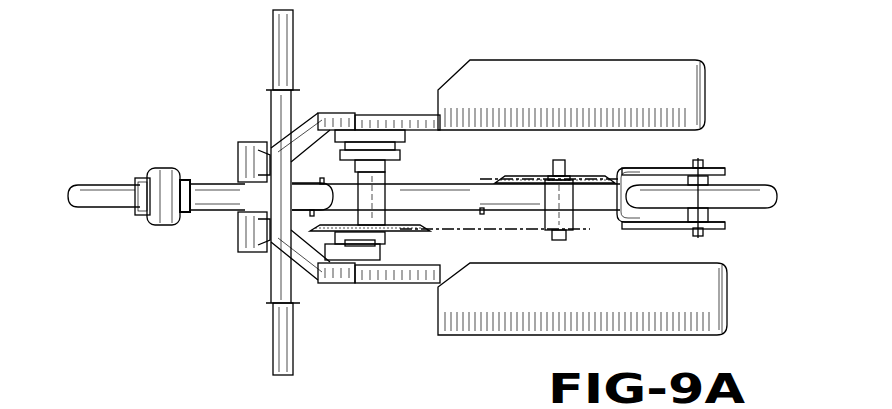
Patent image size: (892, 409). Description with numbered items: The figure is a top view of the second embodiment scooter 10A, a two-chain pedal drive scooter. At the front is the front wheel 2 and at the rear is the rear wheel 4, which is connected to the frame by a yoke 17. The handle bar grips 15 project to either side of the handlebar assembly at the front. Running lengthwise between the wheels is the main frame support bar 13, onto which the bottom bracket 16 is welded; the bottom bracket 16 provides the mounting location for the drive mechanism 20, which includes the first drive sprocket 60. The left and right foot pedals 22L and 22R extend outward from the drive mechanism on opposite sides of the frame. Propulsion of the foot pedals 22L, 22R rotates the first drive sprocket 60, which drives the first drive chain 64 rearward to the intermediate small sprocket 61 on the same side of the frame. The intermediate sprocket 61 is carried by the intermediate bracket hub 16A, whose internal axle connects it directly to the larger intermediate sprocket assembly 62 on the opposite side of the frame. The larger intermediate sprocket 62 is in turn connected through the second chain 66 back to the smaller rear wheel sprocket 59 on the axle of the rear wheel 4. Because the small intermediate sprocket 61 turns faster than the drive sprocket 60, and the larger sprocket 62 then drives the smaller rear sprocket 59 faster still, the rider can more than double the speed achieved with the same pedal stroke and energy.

The second embodiment scooter 10A is at (150, 72).
The front wheel 2 is at (85, 188).
The rear wheel 4 is at (770, 200).
The main frame support bar 13 is at (465, 200).
The handle bar grips 15 is at (293, 45).
The bottom bracket 16 is at (368, 183).
The intermediate bracket hub 16A is at (553, 220).
The yoke 17 is at (718, 226).
The drive mechanism 20 is at (398, 125).
The right foot pedal 22R is at (620, 96).
The left foot pedal 22L is at (593, 300).
The rear wheel sprocket 59 is at (718, 178).
The first drive sprocket 60 is at (392, 226).
The intermediate small sprocket 61 is at (580, 222).
The intermediate sprocket assembly 62 is at (535, 177).
The first drive chain 64 is at (455, 229).
The second chain 66 is at (657, 178).